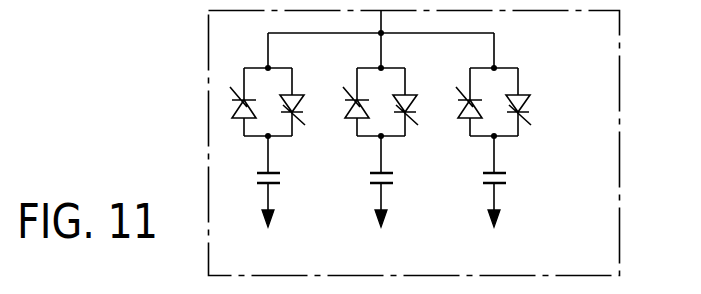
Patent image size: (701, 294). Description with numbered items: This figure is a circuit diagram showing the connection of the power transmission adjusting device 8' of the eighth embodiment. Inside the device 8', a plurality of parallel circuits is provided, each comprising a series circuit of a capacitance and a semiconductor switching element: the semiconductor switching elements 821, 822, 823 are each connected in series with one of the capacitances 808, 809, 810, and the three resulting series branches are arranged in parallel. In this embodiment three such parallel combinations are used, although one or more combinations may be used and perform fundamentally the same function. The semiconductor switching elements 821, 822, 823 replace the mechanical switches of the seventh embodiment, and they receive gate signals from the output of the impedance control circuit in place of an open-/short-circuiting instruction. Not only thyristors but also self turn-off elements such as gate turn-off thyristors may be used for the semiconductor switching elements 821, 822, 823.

The power transmission adjusting device 8' is at (445, 143).
The semiconductor switching element 821 is at (317, 70).
The semiconductor switching element 822 is at (430, 70).
The semiconductor switching element 823 is at (542, 70).
The capacitance 808 is at (283, 180).
The capacitance 809 is at (396, 180).
The capacitance 810 is at (508, 180).